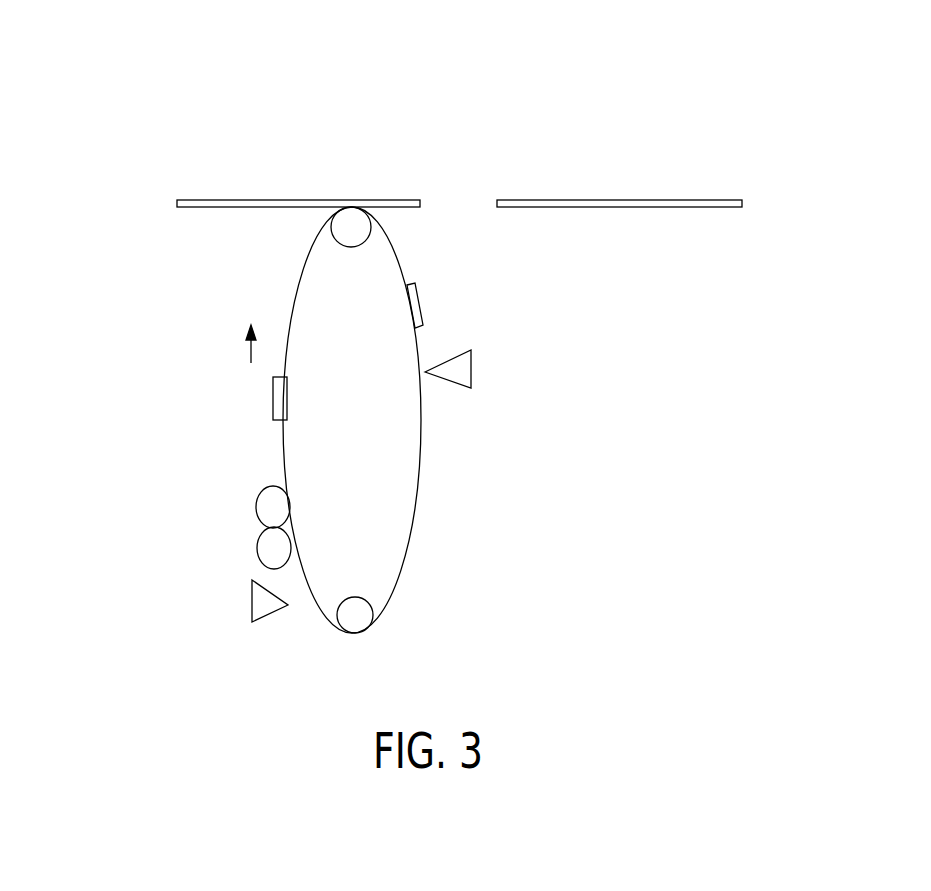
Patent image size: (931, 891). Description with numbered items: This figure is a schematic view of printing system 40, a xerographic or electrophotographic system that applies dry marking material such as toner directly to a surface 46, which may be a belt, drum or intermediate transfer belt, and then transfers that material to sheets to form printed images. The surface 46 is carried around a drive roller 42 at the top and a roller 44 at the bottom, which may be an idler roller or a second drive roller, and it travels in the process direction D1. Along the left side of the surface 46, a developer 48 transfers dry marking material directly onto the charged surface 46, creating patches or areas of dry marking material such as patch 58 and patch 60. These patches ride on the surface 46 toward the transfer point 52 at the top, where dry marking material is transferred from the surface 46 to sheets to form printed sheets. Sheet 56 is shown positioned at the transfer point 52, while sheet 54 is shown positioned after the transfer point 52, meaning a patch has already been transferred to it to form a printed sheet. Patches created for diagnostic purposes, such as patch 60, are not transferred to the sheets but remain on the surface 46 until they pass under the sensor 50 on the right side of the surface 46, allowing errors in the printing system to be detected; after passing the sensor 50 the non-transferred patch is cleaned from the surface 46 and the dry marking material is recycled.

The printing system 40 is at (137, 90).
The drive roller 42 is at (333, 234).
The roller 44 is at (340, 618).
The surface 46 is at (432, 523).
The developer 48 is at (235, 533).
The sensor 50 is at (478, 368).
The transfer point 52 is at (387, 213).
The sheet 54 is at (622, 200).
The sheet 56 is at (218, 200).
The patch 58 is at (272, 396).
The patch 60 is at (426, 300).
The process direction D1 is at (250, 356).